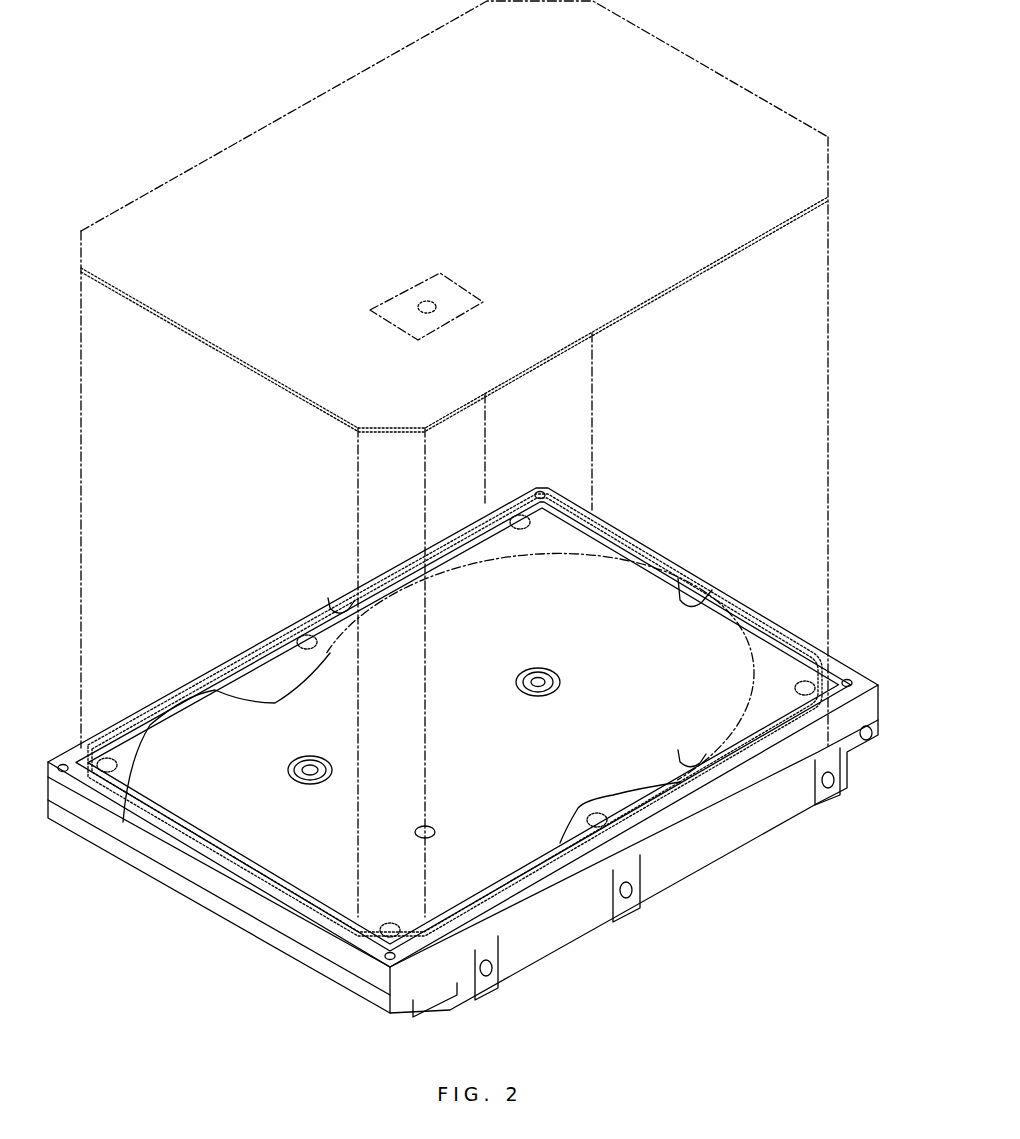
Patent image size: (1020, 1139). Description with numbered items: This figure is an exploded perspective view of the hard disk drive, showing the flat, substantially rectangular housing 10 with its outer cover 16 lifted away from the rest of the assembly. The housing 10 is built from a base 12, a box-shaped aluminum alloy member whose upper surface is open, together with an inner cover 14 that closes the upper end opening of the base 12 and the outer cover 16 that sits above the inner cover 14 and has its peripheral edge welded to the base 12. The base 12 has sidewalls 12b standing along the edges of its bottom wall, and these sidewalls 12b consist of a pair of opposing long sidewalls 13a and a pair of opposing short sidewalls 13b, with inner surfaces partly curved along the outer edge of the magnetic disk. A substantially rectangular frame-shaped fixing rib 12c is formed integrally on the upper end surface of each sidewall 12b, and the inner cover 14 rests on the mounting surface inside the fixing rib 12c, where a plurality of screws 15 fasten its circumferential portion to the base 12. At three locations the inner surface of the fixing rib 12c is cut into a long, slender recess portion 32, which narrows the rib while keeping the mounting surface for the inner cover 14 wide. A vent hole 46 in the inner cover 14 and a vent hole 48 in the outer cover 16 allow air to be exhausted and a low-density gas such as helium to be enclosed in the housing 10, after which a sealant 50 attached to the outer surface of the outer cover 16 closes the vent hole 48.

The housing 10 is at (170, 585).
The base 12 is at (475, 752).
The sidewalls 12b is at (555, 940).
The fixing rib 12c is at (625, 528).
The long sidewalls 13a is at (745, 828).
The short sidewalls 13b is at (237, 905).
The inner cover 14 is at (455, 701).
The screws 15 is at (521, 520).
The outer cover 16 is at (327, 113).
The recess portion 32 is at (340, 600).
The vent hole 46 is at (438, 830).
The vent hole 48 is at (423, 300).
The sealant 50 is at (462, 288).